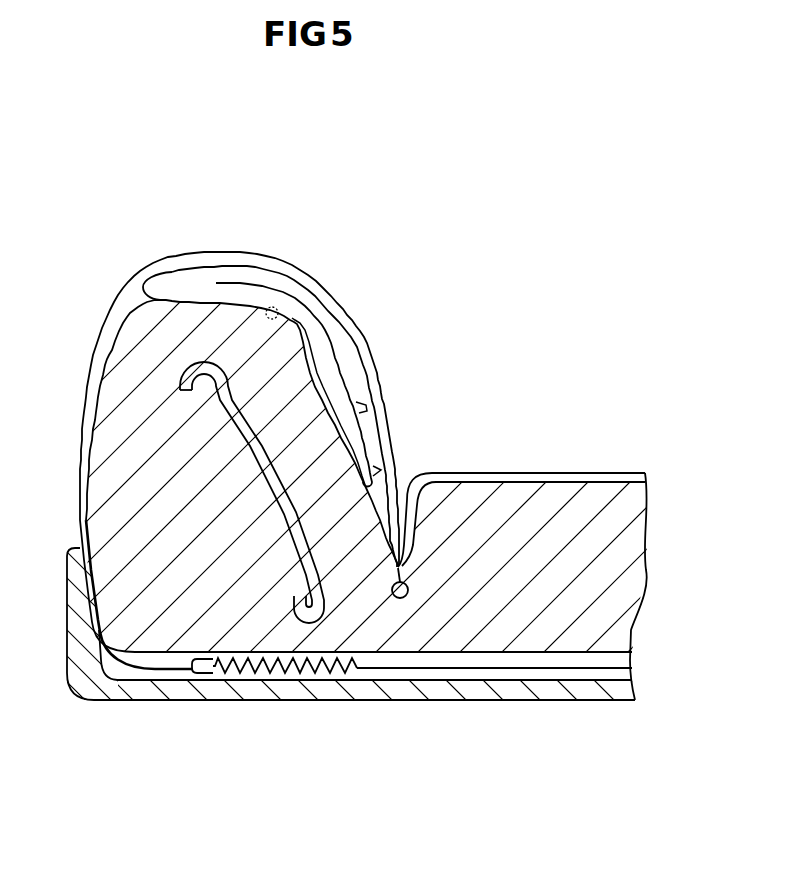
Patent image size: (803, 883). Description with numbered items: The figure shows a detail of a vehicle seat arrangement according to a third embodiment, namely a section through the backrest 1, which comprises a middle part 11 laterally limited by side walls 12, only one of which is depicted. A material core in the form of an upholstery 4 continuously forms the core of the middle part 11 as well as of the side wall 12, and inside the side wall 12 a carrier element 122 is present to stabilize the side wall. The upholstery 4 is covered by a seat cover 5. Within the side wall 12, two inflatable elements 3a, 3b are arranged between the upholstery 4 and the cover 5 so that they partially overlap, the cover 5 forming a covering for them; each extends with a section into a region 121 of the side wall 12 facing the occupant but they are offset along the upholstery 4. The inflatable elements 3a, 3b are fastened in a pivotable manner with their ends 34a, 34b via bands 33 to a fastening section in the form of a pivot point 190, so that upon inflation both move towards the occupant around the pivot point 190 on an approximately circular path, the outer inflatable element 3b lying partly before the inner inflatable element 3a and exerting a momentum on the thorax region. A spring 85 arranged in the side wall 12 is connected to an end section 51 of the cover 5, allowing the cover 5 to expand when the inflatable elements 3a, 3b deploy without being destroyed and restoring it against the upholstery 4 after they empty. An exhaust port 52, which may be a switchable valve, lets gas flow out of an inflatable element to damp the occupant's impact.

The backrest 1 is at (594, 741).
The inflatable element 3a is at (381, 440).
The inflatable element 3b is at (333, 342).
The upholstery 4 is at (124, 480).
The seat cover 5 is at (524, 472).
The middle part 11 is at (521, 638).
The side wall 12 is at (114, 249).
The bands 33 is at (436, 481).
The end 34a is at (375, 466).
The end 34b is at (366, 407).
The end section 51 is at (132, 660).
The exhaust port 52 is at (274, 306).
The spring 85 is at (294, 670).
The region 121 is at (323, 297).
The carrier element 122 is at (252, 445).
The pivot point 190 is at (406, 597).